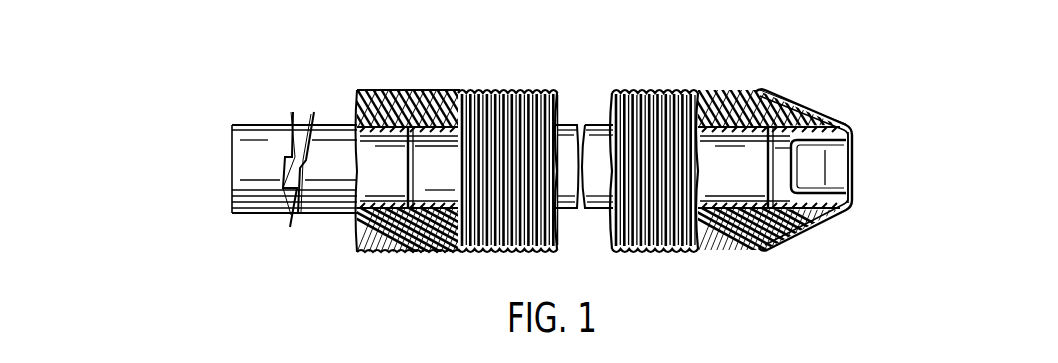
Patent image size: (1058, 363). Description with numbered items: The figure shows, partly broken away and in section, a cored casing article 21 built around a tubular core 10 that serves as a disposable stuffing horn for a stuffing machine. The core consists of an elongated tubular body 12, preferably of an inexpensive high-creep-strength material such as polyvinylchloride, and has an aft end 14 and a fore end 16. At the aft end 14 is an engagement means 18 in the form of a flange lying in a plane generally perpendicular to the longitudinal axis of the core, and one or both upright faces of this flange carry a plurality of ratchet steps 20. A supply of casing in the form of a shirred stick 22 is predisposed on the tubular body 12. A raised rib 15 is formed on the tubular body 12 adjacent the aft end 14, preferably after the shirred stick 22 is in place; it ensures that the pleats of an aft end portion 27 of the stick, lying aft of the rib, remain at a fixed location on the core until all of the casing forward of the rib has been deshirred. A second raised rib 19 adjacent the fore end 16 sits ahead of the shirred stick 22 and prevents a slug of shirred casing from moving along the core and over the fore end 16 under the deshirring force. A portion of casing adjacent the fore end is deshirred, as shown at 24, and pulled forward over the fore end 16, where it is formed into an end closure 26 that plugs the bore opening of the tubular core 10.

The tubular core 10 is at (571, 124).
The elongated tubular body 12 is at (565, 207).
The aft end 14 is at (257, 127).
The raised rib 15 is at (400, 203).
The fore end 16 is at (820, 112).
The engagement means 18 is at (293, 112).
The second raised rib 19 is at (768, 130).
The ratchet steps 20 is at (308, 127).
The cored casing article 21 is at (643, 74).
The shirred stick 22 is at (448, 90).
The deshirred portion of casing 24 is at (790, 92).
The end closure 26 is at (800, 164).
The aft end portion of the shirred stick 27 is at (409, 258).